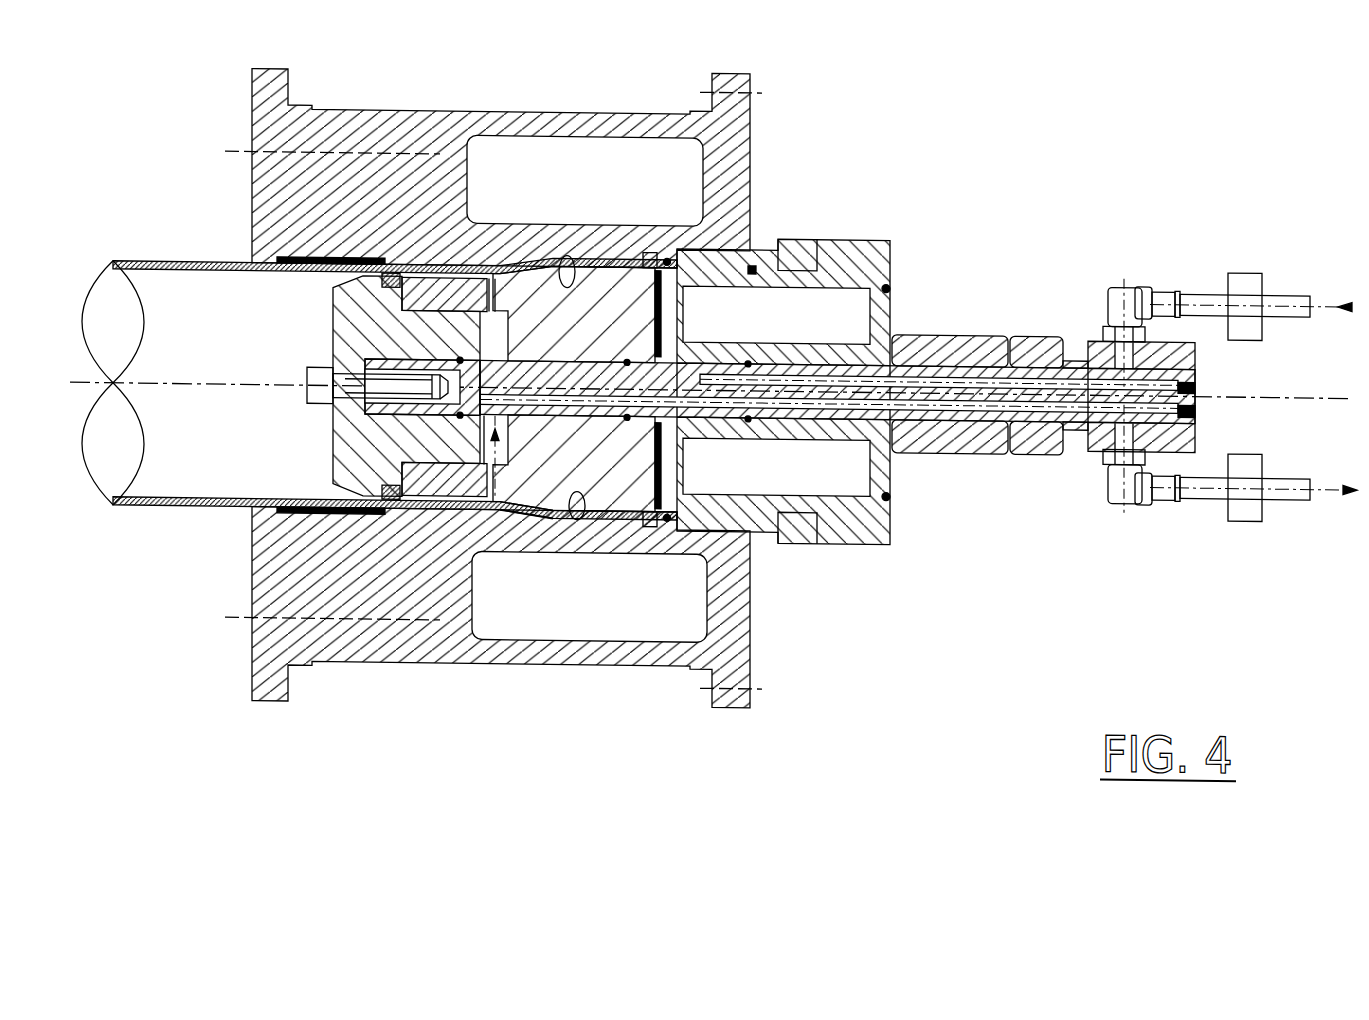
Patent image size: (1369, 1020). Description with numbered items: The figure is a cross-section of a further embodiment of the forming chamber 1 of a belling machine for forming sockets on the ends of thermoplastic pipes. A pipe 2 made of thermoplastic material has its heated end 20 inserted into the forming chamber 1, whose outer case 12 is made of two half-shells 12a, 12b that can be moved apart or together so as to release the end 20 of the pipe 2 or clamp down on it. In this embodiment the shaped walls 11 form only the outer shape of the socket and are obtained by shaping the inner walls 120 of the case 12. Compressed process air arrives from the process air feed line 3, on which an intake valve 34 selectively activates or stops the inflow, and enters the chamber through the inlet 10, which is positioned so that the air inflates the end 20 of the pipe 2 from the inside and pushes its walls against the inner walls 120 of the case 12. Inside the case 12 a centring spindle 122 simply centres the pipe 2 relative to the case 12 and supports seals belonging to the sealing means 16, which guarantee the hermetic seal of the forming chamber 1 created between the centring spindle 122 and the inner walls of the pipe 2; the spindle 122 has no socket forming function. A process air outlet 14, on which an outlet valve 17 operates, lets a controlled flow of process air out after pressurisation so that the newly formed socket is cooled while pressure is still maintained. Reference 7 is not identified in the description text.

The forming chamber 1 is at (630, 244).
The pipe 2 is at (177, 520).
The process air feed line 3 is at (1295, 280).
The return line 7 is at (1289, 500).
The inlet 10 is at (670, 258).
The shaped walls 11 is at (657, 250).
The outer case 12 is at (493, 400).
The half-shell 12a is at (397, 113).
The half-shell 12b is at (358, 666).
The process air outlet 14 is at (502, 286).
The sealing elements 16 is at (372, 292).
The outlet valve 17 is at (1243, 516).
The heated end 20 is at (548, 521).
The intake valve 34 is at (1246, 265).
The inner walls 120 is at (567, 256).
The centring spindle 122 is at (342, 434).